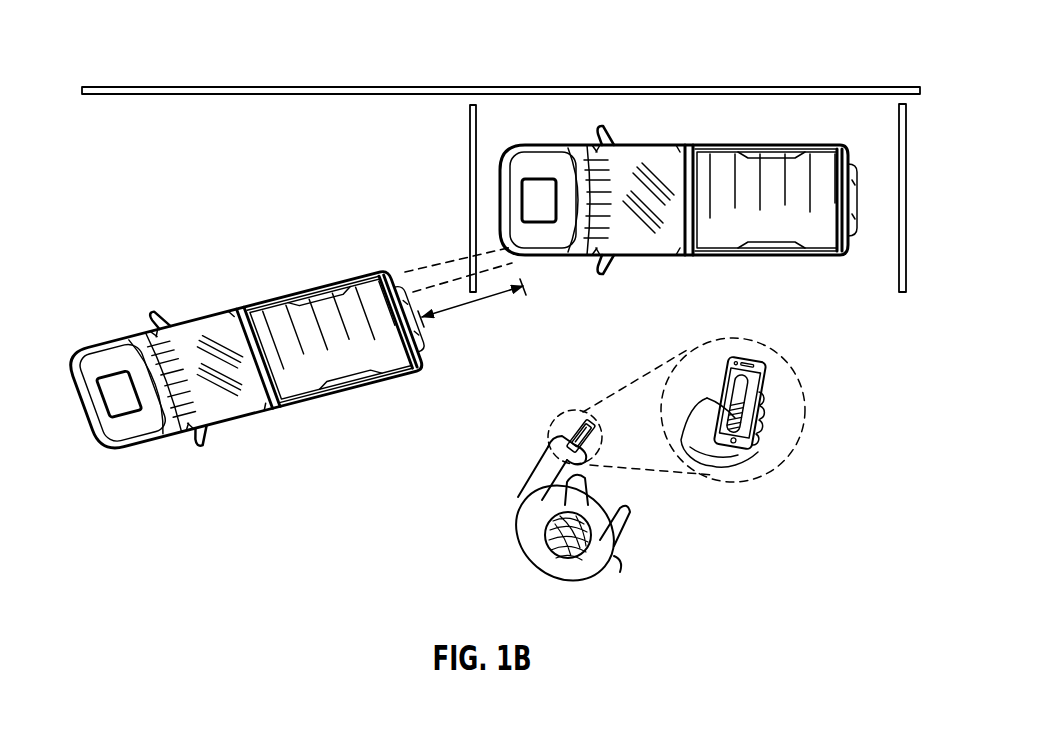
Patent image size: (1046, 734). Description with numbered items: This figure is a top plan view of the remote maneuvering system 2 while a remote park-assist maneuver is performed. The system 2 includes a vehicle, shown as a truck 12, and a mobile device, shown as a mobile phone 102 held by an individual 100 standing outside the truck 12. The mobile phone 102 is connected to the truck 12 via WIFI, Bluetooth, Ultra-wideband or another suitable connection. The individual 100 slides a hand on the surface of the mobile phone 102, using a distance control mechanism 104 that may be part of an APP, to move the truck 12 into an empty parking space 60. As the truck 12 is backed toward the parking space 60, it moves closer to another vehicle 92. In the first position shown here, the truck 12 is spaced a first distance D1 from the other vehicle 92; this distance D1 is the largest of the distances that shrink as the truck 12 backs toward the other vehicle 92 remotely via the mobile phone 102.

The remote maneuvering system 2 is at (130, 54).
The parking space 60 is at (227, 162).
The other vehicle 92 is at (799, 126).
The truck 12 is at (186, 470).
The first distance D1 is at (468, 303).
The individual 100 is at (635, 577).
The mobile phone 102 is at (724, 385).
The distance control mechanism 104 is at (756, 394).